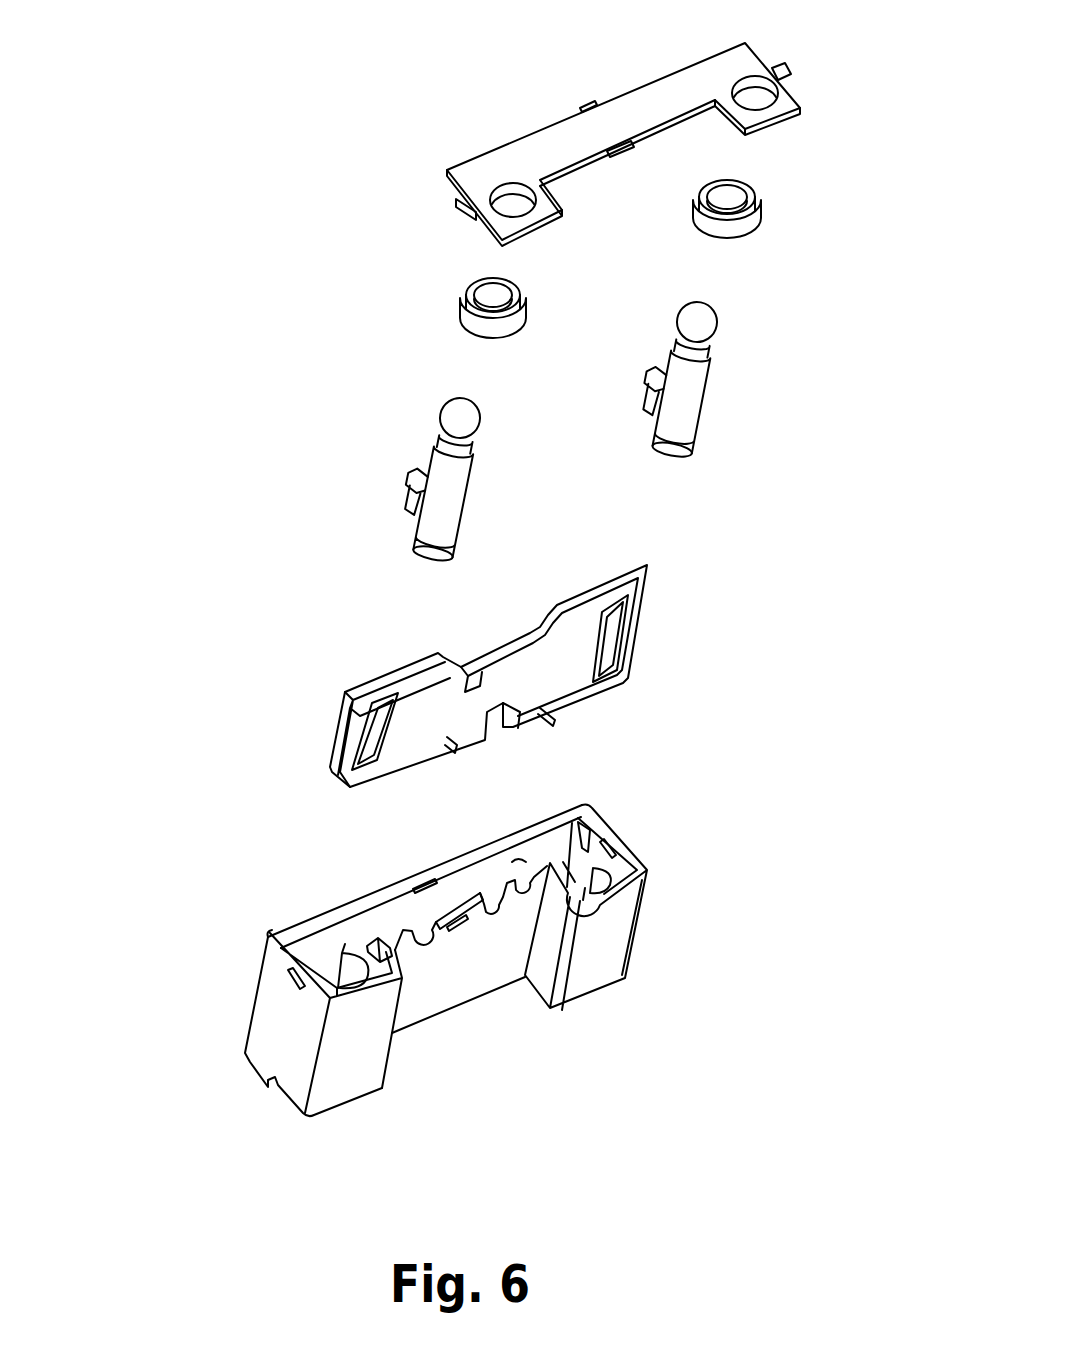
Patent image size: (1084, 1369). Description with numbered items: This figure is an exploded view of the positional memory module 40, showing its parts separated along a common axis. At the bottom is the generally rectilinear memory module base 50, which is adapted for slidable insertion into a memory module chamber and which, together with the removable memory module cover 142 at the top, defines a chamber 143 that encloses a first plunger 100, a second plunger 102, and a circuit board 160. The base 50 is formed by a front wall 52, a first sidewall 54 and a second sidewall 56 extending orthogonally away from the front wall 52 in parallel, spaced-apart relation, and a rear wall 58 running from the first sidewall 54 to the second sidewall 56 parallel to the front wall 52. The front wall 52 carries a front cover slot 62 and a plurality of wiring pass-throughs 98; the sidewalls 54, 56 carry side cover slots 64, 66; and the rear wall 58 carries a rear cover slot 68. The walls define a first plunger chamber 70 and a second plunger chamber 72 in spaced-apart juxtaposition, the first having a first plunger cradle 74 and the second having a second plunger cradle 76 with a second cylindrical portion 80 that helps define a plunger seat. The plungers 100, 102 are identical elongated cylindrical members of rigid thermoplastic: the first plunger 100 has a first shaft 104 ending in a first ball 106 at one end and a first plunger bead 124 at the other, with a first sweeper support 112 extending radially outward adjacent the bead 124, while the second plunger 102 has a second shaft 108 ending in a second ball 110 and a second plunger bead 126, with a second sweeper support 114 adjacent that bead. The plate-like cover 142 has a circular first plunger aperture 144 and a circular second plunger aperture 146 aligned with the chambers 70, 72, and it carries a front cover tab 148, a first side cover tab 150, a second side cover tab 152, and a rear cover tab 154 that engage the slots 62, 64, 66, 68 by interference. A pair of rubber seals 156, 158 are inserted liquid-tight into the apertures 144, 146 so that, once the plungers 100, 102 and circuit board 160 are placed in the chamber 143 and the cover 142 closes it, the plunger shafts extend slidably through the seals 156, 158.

The positional memory module 40 is at (215, 686).
The memory module base 50 is at (610, 922).
The front wall 52 is at (428, 990).
The first sidewall 54 is at (272, 1010).
The second sidewall 56 is at (618, 847).
The rear wall 58 is at (291, 926).
The front cover slot 62 is at (461, 926).
The side cover slot 64 is at (297, 988).
The side cover slot 66 is at (610, 848).
The rear cover slot 68 is at (420, 887).
The first plunger chamber 70 is at (346, 1006).
The second plunger chamber 72 is at (615, 881).
The first plunger cradle 74 is at (361, 1003).
The second plunger cradle 76 is at (588, 905).
The second cylindrical portion 80 is at (590, 848).
The wiring pass-throughs 98 is at (494, 906).
The first plunger 100 is at (414, 534).
The second plunger 102 is at (700, 434).
The first shaft 104 is at (437, 454).
The first ball 106 is at (455, 415).
The second ball 108 is at (697, 358).
The ball head 110 is at (712, 323).
The first sweeper support 112 is at (402, 508).
The second sweeper support 114 is at (650, 407).
The first plunger bead 124 is at (420, 554).
The second plunger bead 126 is at (669, 456).
The memory module cover 142 is at (537, 126).
The chamber 143 is at (518, 858).
The first plunger aperture 144 is at (506, 191).
The second plunger aperture 146 is at (740, 92).
The front cover tab 148 is at (622, 152).
The first side cover tab 150 is at (455, 204).
The second side cover tab 152 is at (781, 75).
The rear cover tab 154 is at (589, 103).
The rubber seal 156 is at (478, 299).
The rubber seal 158 is at (755, 205).
The circuit board 160 is at (351, 684).